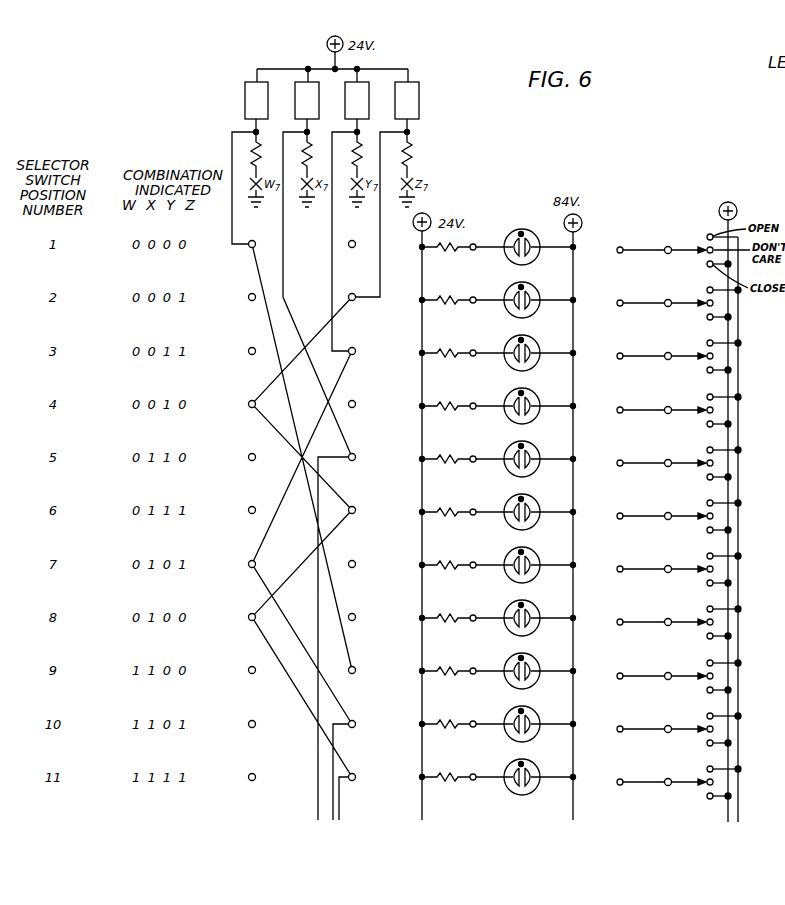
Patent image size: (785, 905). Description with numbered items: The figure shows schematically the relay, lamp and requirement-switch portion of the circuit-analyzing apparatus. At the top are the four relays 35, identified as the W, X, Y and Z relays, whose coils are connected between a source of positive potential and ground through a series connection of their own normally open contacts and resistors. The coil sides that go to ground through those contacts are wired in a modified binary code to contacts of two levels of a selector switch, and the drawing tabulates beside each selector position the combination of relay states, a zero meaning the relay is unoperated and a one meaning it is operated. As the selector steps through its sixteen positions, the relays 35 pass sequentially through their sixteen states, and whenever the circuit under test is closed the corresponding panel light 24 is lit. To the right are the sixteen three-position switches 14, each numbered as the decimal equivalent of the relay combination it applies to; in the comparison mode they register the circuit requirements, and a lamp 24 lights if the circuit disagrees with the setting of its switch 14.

The relay 35 is at (299, 80).
The panel light 24 is at (509, 288).
The three-position switch 14 is at (665, 299).